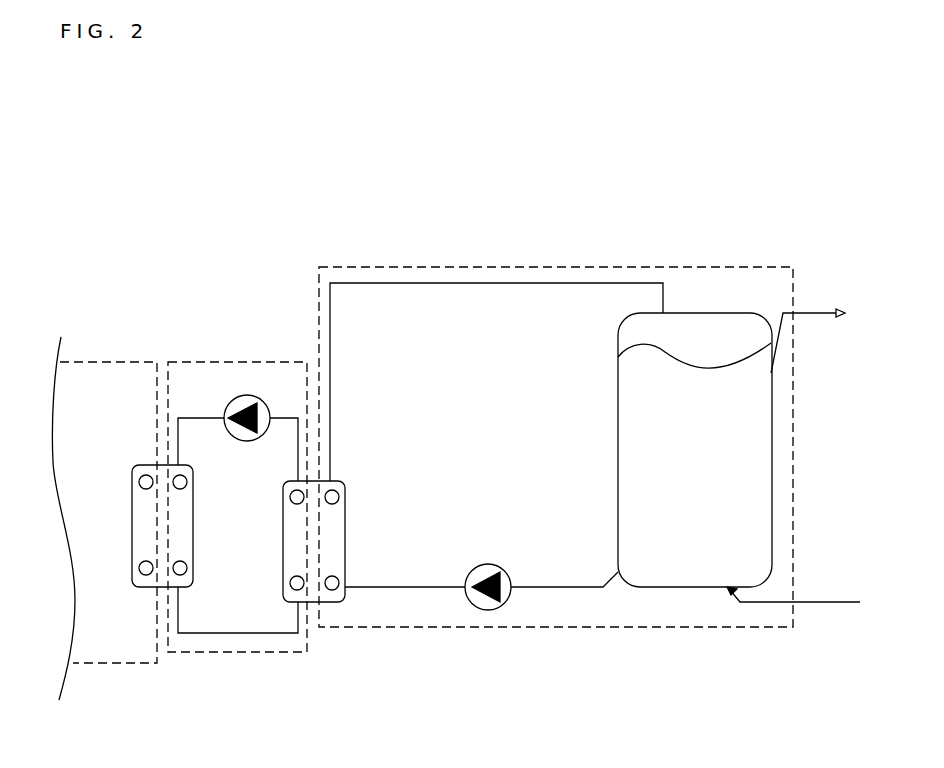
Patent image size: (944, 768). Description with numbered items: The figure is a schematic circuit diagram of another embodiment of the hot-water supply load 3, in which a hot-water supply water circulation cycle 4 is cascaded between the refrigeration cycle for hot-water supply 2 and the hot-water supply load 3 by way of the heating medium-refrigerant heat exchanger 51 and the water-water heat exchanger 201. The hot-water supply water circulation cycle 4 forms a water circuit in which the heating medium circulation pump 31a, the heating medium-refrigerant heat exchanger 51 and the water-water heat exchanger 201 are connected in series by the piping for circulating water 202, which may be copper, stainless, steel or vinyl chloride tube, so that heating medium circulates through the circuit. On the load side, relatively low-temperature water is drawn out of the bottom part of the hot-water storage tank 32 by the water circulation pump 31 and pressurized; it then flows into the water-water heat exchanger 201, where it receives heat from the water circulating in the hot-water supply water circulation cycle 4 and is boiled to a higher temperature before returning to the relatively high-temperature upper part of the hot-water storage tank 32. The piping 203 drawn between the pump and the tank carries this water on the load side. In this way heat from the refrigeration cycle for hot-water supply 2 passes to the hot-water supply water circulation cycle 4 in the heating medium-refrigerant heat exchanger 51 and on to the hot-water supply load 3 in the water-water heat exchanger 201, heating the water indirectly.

The refrigeration cycle for hot-water supply 2 is at (107, 362).
The hot-water supply water circulation cycle 4 is at (193, 362).
The hot-water supply load 3 is at (417, 268).
The water circulation pump 31 is at (485, 565).
The heating medium circulation pump 31a is at (243, 395).
The hot-water storage tank 32 is at (633, 415).
The heating medium-refrigerant heat exchanger 51 is at (130, 503).
The water-water heat exchanger 201 is at (345, 535).
The piping for circulating water 202 is at (262, 633).
The pipe 203 is at (432, 587).